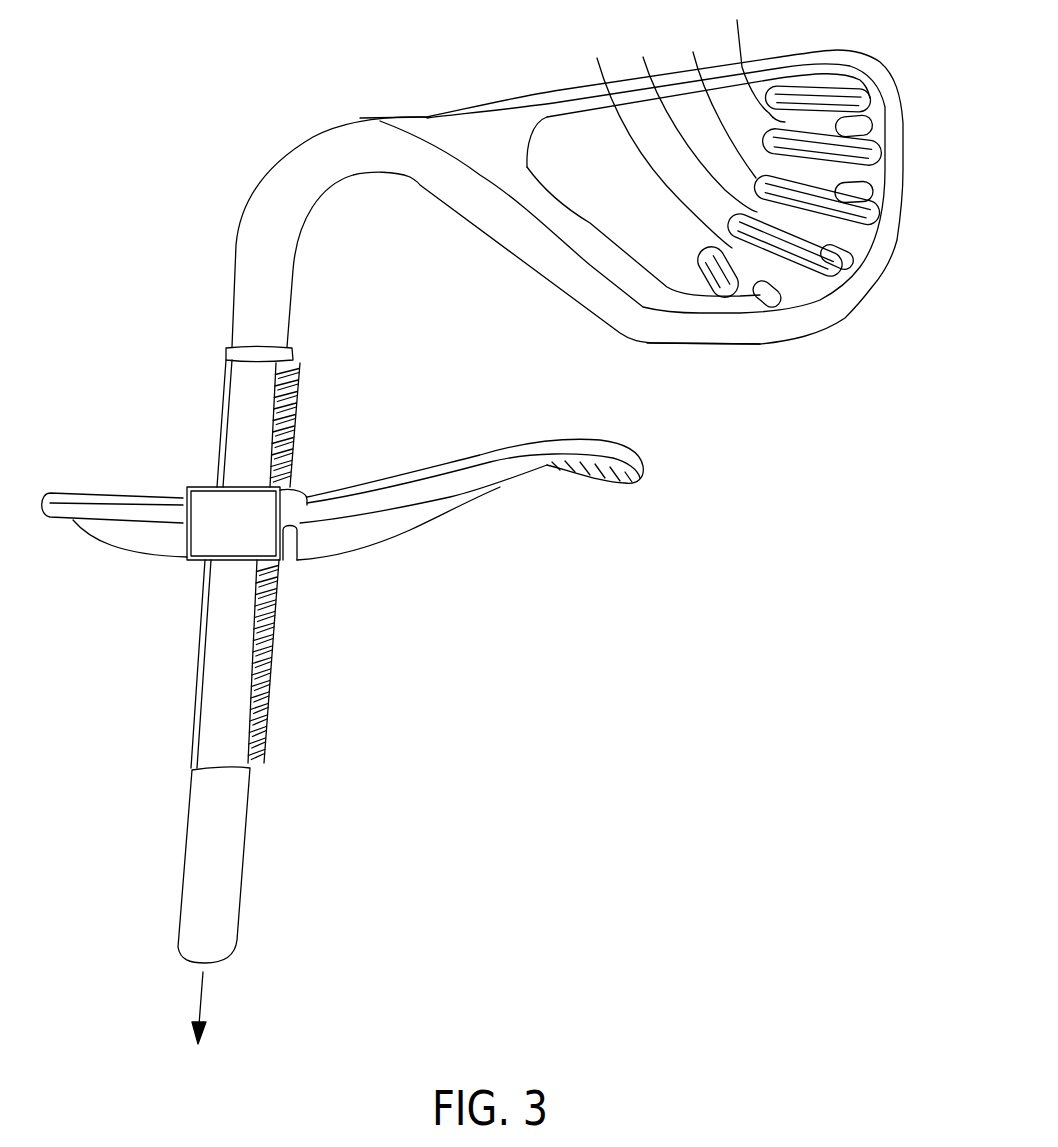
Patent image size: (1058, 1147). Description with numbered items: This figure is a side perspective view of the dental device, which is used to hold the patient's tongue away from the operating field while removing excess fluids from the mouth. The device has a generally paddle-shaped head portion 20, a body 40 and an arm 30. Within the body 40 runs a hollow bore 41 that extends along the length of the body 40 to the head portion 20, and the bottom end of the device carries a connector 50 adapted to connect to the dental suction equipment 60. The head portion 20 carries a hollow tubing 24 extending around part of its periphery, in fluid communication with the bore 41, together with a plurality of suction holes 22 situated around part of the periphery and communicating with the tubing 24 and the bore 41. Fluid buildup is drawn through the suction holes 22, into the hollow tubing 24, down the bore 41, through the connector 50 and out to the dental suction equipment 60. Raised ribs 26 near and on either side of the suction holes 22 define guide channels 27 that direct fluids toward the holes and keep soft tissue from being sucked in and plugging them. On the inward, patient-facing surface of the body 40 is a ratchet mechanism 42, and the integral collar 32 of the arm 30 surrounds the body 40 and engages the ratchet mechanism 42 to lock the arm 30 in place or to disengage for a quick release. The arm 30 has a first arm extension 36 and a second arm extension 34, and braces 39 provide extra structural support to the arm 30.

The head portion 20 is at (507, 147).
The suction holes 22 is at (853, 123).
The hollow tubing 24 is at (490, 217).
The raised ribs 26 is at (867, 80).
The guide channels 27 is at (684, 124).
The arm 30 is at (440, 487).
The collar 32 is at (197, 560).
The second arm extension 34 is at (82, 493).
The first arm extension 36 is at (627, 450).
The brace 39 is at (130, 553).
The body 40 is at (234, 287).
The hollow bore 41 is at (277, 190).
The ratchet mechanism 42 is at (273, 593).
The connector 50 is at (237, 923).
The dental suction equipment 60 is at (205, 990).